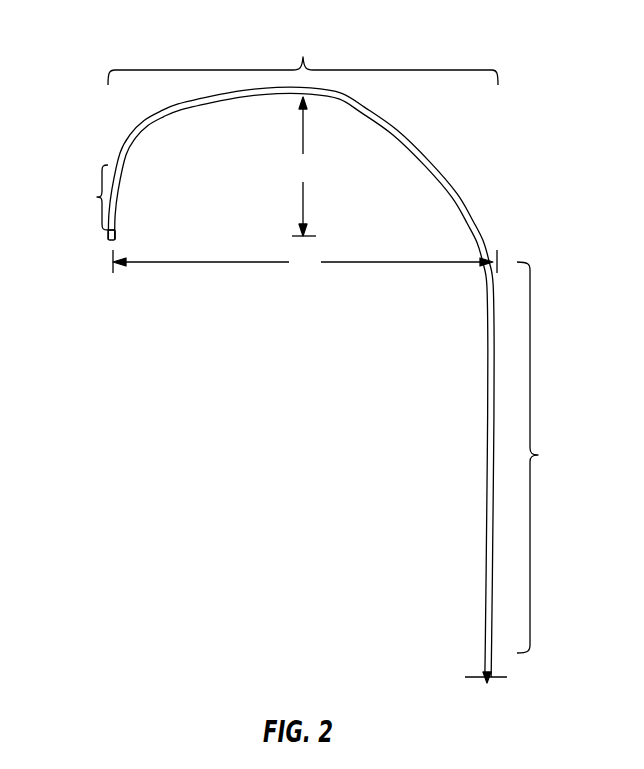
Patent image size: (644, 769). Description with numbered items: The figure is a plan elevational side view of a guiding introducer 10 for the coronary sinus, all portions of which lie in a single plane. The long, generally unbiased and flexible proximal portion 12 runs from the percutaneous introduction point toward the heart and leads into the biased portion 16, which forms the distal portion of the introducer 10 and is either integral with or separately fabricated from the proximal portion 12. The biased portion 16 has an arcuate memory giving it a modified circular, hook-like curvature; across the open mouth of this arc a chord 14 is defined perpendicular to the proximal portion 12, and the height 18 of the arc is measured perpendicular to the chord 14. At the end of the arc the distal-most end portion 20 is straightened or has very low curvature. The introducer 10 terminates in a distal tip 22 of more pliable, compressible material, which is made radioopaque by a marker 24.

The introducer 10 is at (522, 104).
The proximal portion 12 is at (520, 472).
The chord 14 is at (305, 263).
The biased portion 16 is at (303, 57).
The height 18 is at (306, 166).
The distal-most end portion 20 is at (89, 197).
The distal tip 22 is at (101, 246).
The marker 24 is at (113, 232).